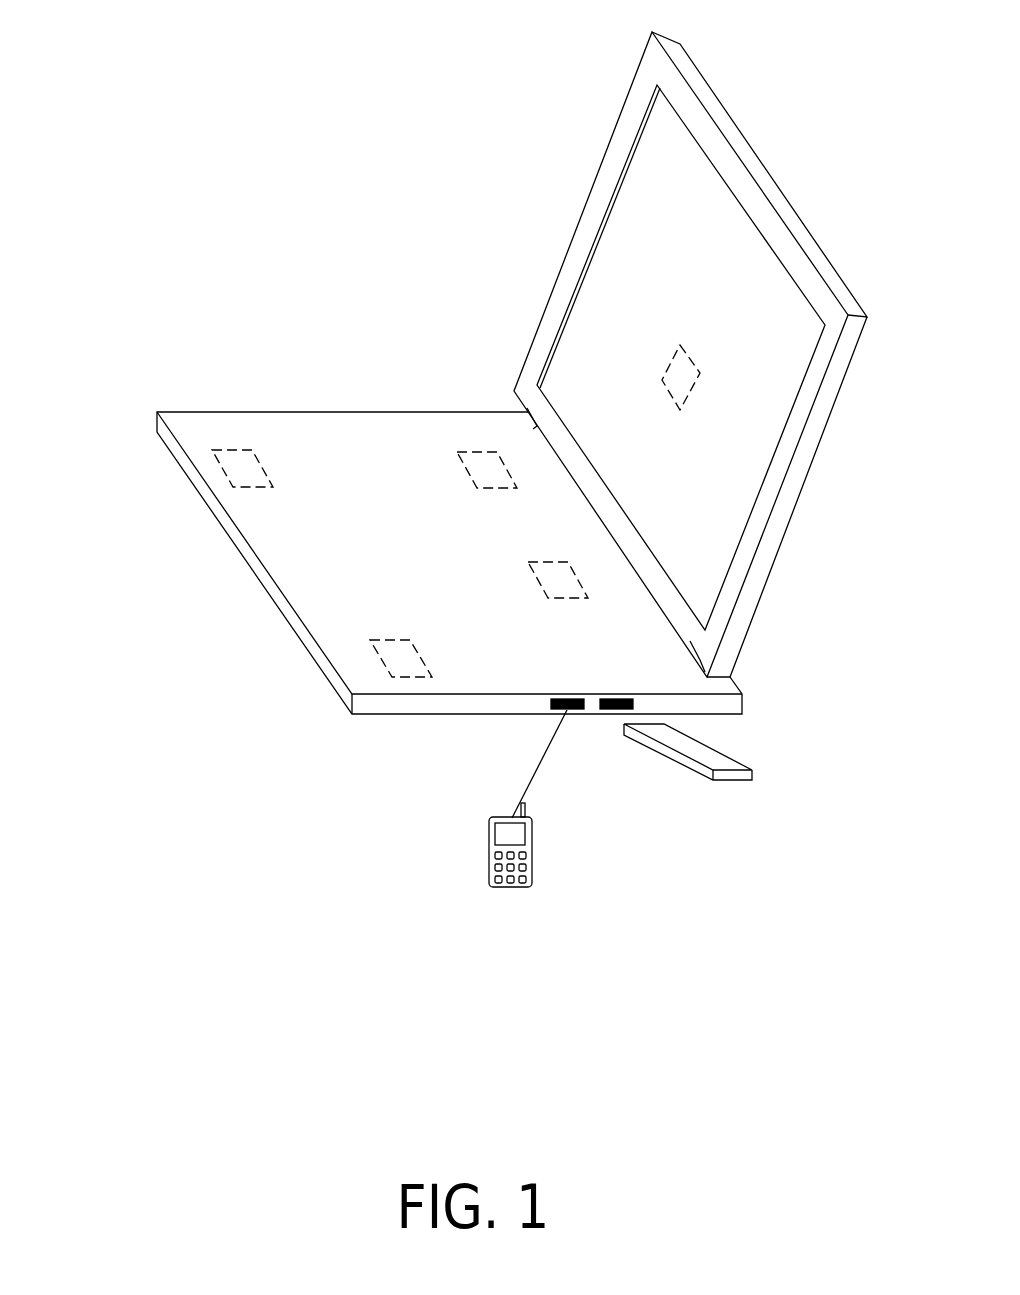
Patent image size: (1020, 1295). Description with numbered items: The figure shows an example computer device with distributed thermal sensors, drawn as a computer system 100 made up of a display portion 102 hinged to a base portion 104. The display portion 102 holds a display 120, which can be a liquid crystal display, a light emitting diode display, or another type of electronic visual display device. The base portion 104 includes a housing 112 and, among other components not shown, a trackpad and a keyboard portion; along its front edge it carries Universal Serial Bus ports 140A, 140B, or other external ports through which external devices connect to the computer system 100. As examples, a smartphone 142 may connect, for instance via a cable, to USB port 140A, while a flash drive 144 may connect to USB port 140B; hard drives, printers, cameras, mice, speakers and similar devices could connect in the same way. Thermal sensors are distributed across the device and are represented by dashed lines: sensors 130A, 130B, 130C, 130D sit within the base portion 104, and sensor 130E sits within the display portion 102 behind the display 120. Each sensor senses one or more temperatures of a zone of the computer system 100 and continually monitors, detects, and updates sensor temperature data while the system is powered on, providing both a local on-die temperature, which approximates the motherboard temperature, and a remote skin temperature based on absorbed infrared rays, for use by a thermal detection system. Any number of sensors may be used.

The computer system 100 is at (473, 20).
The display portion 102 is at (690, 354).
The base portion 104 is at (402, 513).
The housing 112 is at (202, 457).
The display 120 is at (783, 323).
The sensor 130A is at (216, 463).
The sensor 130B is at (460, 467).
The sensor 130C is at (385, 657).
The sensor 130D is at (535, 575).
The sensor 130E is at (675, 353).
The USB port 140A is at (563, 697).
The USB port 140B is at (608, 697).
The smartphone 142 is at (489, 857).
The flash drive 144 is at (688, 768).